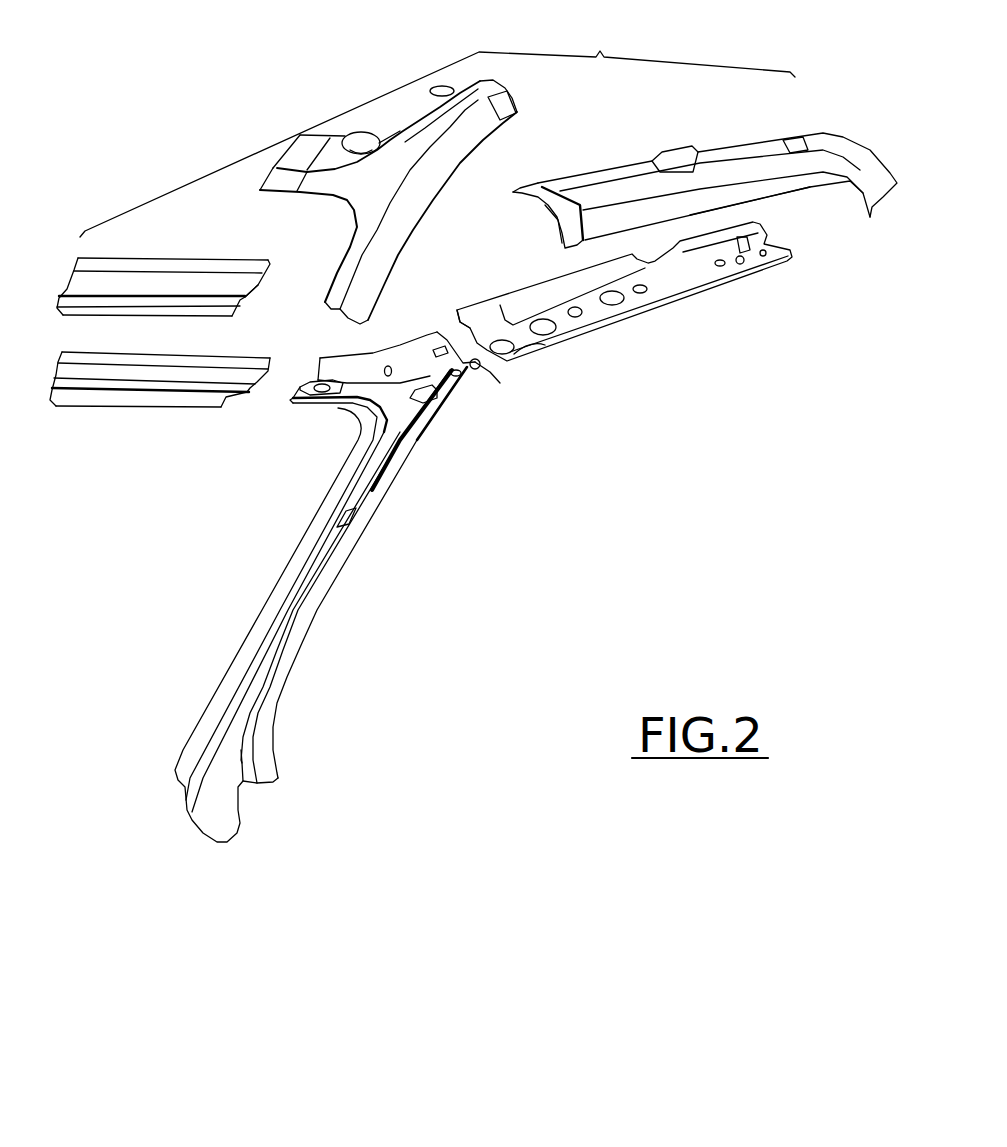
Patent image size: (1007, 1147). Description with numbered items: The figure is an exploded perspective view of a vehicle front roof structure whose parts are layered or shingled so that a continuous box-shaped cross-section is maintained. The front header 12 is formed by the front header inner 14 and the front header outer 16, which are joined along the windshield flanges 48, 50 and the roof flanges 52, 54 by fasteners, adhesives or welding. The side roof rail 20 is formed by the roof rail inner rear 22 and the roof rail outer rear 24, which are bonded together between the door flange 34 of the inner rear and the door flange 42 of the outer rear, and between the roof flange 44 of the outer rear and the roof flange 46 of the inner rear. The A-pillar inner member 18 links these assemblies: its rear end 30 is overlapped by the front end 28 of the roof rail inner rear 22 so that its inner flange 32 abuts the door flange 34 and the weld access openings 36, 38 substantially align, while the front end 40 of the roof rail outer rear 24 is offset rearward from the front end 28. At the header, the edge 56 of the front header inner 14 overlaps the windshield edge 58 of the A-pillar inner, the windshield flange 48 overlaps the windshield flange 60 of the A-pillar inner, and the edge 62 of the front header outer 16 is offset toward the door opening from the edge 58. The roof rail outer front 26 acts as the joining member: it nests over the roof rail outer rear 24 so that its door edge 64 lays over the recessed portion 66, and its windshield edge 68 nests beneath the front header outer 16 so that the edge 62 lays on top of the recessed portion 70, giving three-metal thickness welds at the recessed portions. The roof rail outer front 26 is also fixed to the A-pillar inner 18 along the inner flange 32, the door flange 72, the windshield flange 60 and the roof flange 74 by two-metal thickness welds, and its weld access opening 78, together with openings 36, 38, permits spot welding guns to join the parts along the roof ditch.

The front header 12 is at (183, 238).
The front header inner 14 is at (143, 387).
The front header outer 16 is at (107, 277).
The A-pillar inner member 18 is at (366, 532).
The side roof rail 20 is at (727, 134).
The roof rail inner rear 22 is at (677, 283).
The roof rail outer rear 24 is at (853, 153).
The roof rail outer front 26 is at (516, 103).
The front end 28 is at (467, 333).
The rear end 30 is at (470, 387).
The inner flange 32 is at (500, 383).
The door flange 34 is at (512, 363).
The weld access opening 36 is at (473, 387).
The weld access opening 38 is at (548, 344).
The front end 40 is at (553, 208).
The door flange 42 is at (783, 183).
The roof flange 44 is at (515, 193).
The roof flange 46 is at (693, 249).
The windshield flange 48 is at (195, 400).
The windshield flange 50 is at (197, 307).
The roof flange 52 is at (213, 355).
The roof flange 54 is at (230, 260).
The edge 56 is at (273, 380).
The windshield edge 58 is at (292, 403).
The windshield flange 60 is at (350, 407).
The edge 62 is at (250, 287).
The door edge 64 is at (500, 80).
The recessed portion 66 is at (558, 192).
The windshield edge 68 is at (278, 163).
The recessed portion 70 is at (300, 135).
The door flange 72 is at (407, 237).
The roof flange 74 is at (370, 350).
The weld access opening 78 is at (360, 137).